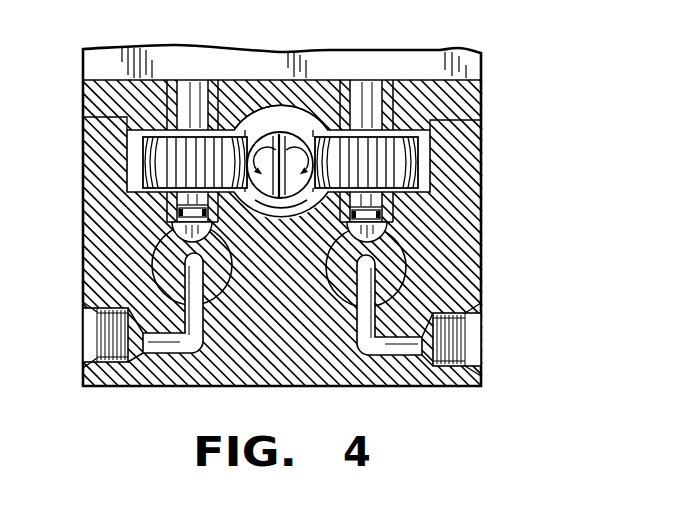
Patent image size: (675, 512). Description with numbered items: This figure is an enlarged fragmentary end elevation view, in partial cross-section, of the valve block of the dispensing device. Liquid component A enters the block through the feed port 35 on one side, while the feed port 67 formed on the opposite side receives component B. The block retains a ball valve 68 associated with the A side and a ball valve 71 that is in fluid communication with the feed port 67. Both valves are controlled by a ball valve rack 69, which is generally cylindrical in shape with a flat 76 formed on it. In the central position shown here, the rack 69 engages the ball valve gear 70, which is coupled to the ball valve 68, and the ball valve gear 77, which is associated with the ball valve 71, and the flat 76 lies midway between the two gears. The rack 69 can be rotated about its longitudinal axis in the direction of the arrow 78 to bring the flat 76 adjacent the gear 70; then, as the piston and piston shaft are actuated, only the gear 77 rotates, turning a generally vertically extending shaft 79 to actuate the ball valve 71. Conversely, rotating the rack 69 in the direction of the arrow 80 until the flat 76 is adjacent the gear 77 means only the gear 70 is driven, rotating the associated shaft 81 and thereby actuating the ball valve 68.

The feed port 35 is at (90, 357).
The feed port 67 is at (455, 366).
The ball valve 68 is at (217, 298).
The ball valve rack 69 is at (290, 138).
The ball valve gear 70 is at (145, 160).
The ball valve 71 is at (340, 290).
The flat 76 is at (307, 125).
The ball valve gear 77 is at (412, 163).
The arrow 78 is at (265, 189).
The shaft 79 is at (382, 203).
The arrow 80 is at (292, 188).
The shaft 81 is at (177, 202).